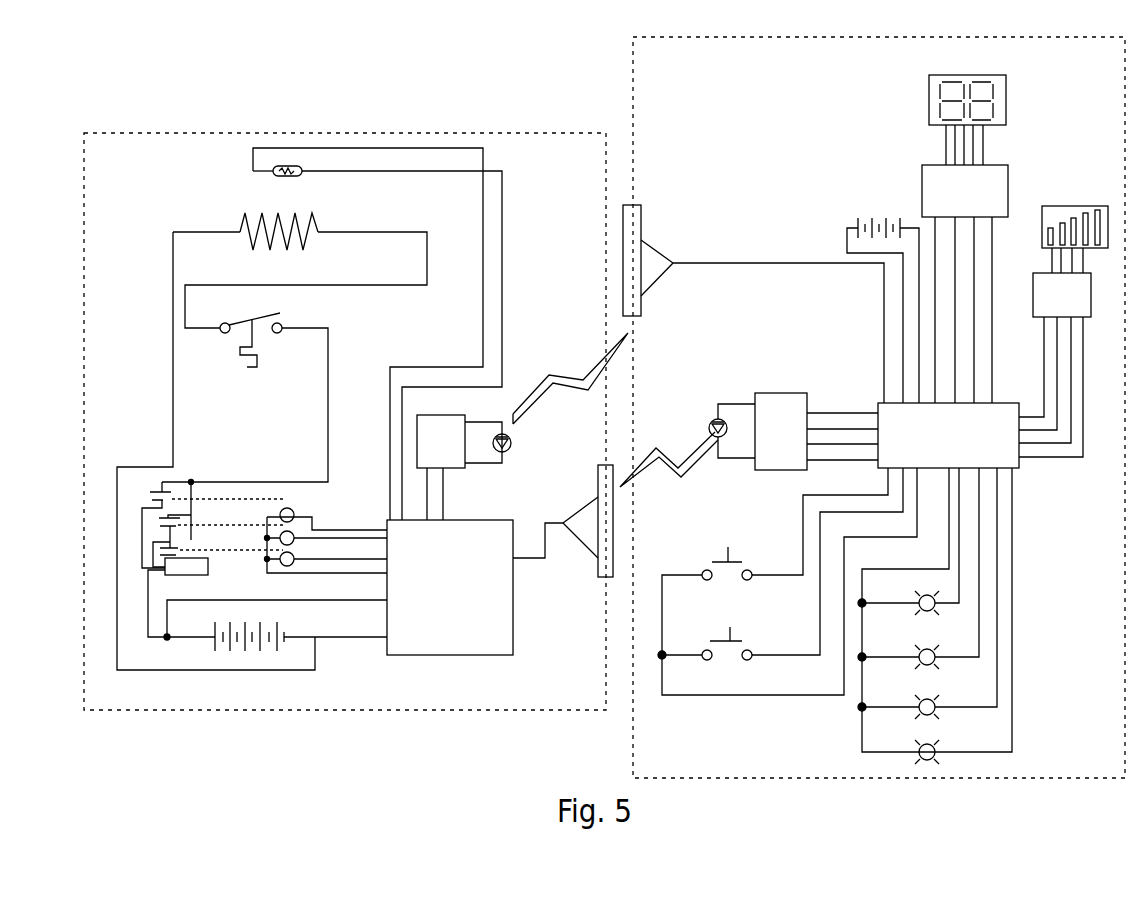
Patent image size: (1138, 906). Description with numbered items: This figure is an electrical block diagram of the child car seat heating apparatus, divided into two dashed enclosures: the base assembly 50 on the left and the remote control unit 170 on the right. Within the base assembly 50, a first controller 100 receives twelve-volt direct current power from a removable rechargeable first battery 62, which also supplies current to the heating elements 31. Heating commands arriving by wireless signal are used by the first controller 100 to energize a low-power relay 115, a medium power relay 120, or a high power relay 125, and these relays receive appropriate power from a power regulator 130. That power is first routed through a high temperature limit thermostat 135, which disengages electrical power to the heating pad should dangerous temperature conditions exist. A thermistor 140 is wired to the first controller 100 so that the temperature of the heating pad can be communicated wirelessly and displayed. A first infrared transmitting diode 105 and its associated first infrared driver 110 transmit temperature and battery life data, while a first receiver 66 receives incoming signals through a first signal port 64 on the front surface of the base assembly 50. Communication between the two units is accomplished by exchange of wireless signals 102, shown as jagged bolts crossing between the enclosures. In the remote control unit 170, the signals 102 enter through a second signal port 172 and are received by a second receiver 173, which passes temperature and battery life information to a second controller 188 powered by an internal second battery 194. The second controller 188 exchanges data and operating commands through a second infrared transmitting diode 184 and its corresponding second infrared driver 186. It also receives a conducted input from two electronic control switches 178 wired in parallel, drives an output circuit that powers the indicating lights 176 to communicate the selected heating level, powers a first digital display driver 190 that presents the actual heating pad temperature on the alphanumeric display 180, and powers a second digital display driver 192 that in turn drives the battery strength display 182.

The base assembly 50 is at (313, 132).
The remote control unit 170 is at (765, 37).
The thermistor 140 is at (282, 168).
The heating elements 31 is at (242, 222).
The high temperature limit thermostat 135 is at (238, 355).
The power regulator 130 is at (187, 567).
The low-power relay 115 is at (290, 508).
The medium power relay 120 is at (292, 533).
The high power relay 125 is at (294, 556).
The first controller 100 is at (495, 633).
The first infrared driver 110 is at (450, 423).
The first infrared transmitting diode 105 is at (508, 451).
The first battery 62 is at (243, 650).
The first receiver 66 is at (588, 531).
The first signal port 64 is at (606, 580).
The wireless signals 102 is at (645, 462).
The second signal port 172 is at (640, 212).
The second receiver 173 is at (648, 262).
The second battery 194 is at (858, 222).
The alphanumeric display 180 is at (1006, 92).
The first digital display driver 190 is at (932, 200).
The battery strength display 182 is at (1050, 228).
The second digital display driver 192 is at (1057, 300).
The second controller 188 is at (1003, 447).
The second infrared driver 186 is at (786, 418).
The second infrared transmitting diode 184 is at (716, 418).
The electronic control switches 178 is at (730, 627).
The indicating lights 176 is at (933, 750).